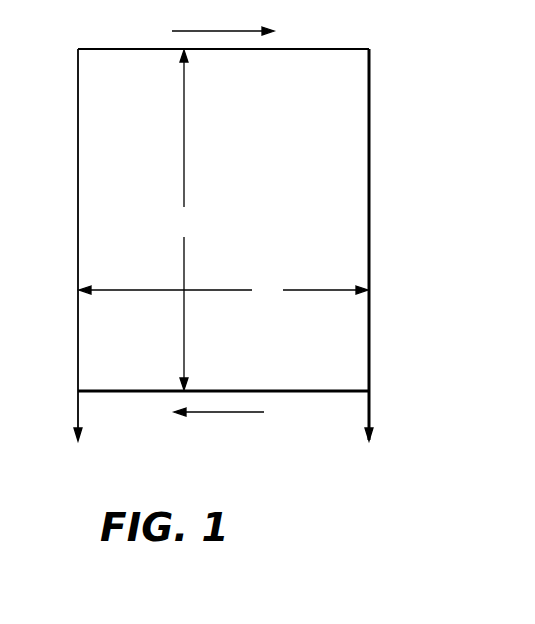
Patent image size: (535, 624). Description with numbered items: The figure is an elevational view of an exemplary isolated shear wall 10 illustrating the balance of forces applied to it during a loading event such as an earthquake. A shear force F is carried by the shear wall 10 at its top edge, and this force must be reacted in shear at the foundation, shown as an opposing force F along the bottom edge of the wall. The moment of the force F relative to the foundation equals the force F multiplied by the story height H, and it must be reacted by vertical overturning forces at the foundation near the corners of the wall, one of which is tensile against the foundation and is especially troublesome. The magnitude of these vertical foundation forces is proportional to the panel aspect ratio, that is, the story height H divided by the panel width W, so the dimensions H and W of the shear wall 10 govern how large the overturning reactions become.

The shear wall 10 is at (327, 151).
The shear force F is at (223, 227).
The story height H is at (183, 220).
The panel width W is at (223, 291).